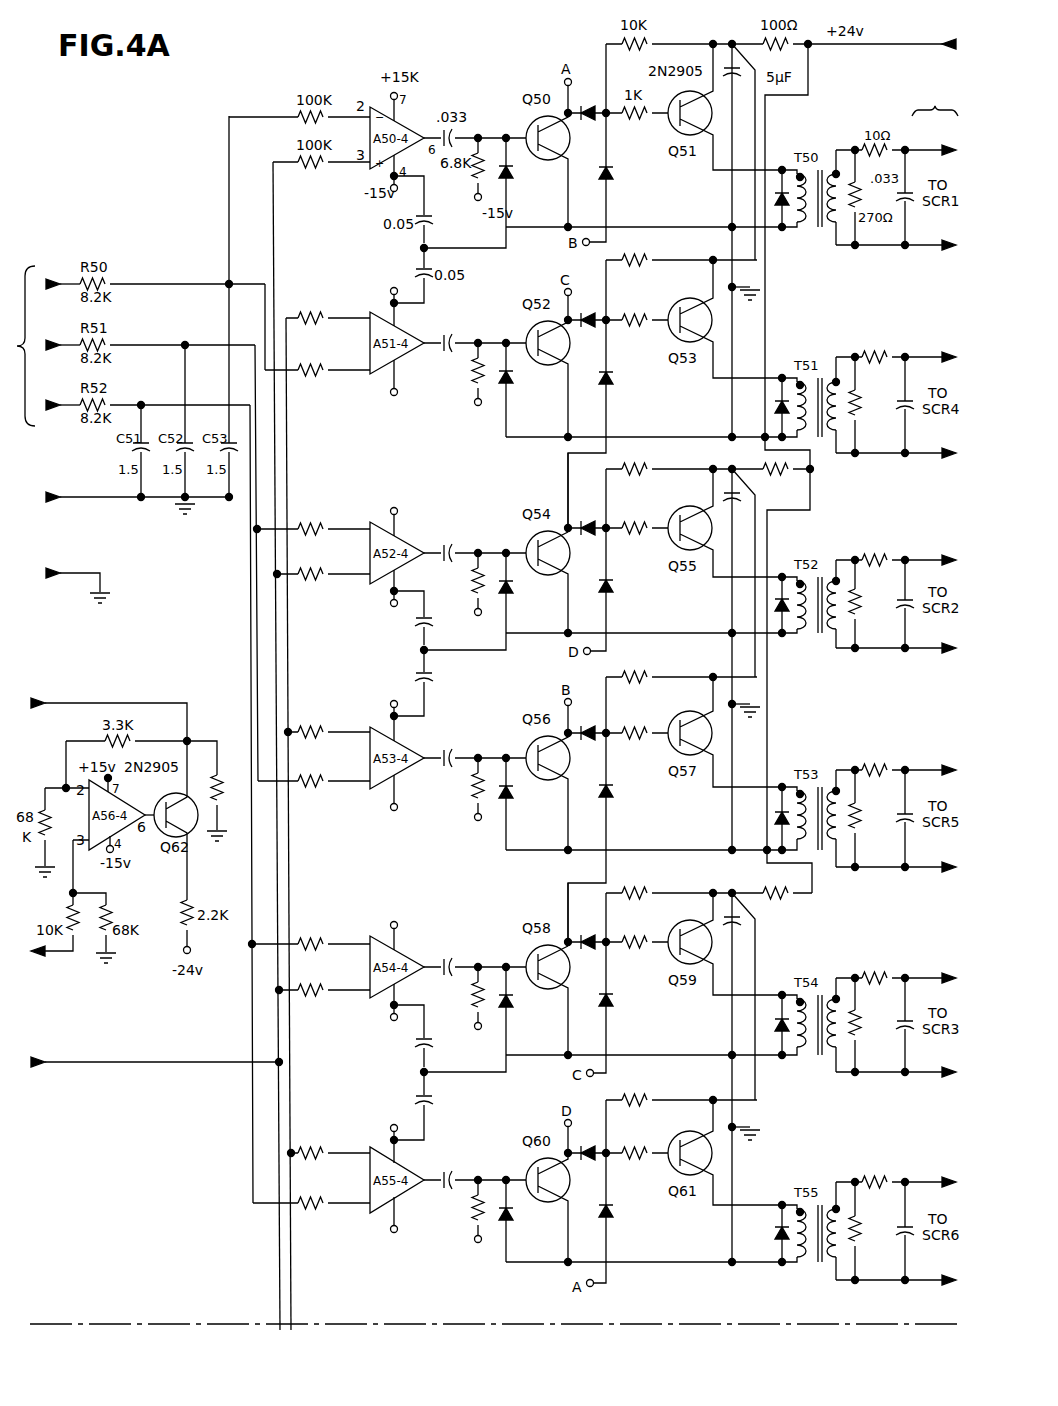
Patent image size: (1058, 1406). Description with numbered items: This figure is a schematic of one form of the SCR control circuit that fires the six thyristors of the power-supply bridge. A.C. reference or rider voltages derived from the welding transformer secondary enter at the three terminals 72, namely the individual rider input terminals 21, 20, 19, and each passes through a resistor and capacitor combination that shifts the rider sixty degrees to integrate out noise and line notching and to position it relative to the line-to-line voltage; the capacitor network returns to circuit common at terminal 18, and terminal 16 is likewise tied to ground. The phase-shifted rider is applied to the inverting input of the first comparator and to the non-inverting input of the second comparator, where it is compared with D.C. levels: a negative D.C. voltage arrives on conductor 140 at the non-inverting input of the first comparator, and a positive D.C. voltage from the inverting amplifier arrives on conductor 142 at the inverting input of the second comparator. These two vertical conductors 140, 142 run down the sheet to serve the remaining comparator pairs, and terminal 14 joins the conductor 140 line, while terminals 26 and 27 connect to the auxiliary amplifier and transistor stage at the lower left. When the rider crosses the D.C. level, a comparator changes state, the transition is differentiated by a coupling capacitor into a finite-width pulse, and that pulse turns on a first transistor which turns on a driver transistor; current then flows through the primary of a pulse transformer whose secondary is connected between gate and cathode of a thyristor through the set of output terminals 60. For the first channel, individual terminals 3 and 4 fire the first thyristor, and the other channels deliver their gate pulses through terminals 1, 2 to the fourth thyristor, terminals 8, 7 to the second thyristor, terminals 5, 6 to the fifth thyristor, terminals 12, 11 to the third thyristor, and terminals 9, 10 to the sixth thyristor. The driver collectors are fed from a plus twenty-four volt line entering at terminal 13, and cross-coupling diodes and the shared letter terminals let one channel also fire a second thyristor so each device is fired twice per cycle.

The output terminal 1 is at (930, 348).
The output terminal 2 is at (930, 445).
The output terminal 3 is at (930, 237).
The output terminal 4 is at (930, 141).
The output terminal 5 is at (930, 761).
The output terminal 6 is at (930, 859).
The output terminal 7 is at (930, 640).
The output terminal 8 is at (930, 551).
The output terminal 9 is at (930, 1173).
The output terminal 10 is at (931, 1272).
The output terminal 11 is at (931, 1064).
The output terminal 12 is at (931, 969).
The terminal 13 is at (860, 245).
The terminal 14 is at (157, 1053).
The terminal 16 is at (78, 576).
The terminal 18 is at (137, 488).
The rider input terminal 19 is at (63, 396).
The rider input terminal 20 is at (62, 336).
The rider input terminal 21 is at (63, 275).
The terminal 26 is at (39, 959).
The terminal 27 is at (109, 710).
The set of output terminals 60 is at (935, 101).
The three terminals 72 is at (41, 343).
The conductor 140 is at (275, 250).
The conductor 142 is at (287, 479).